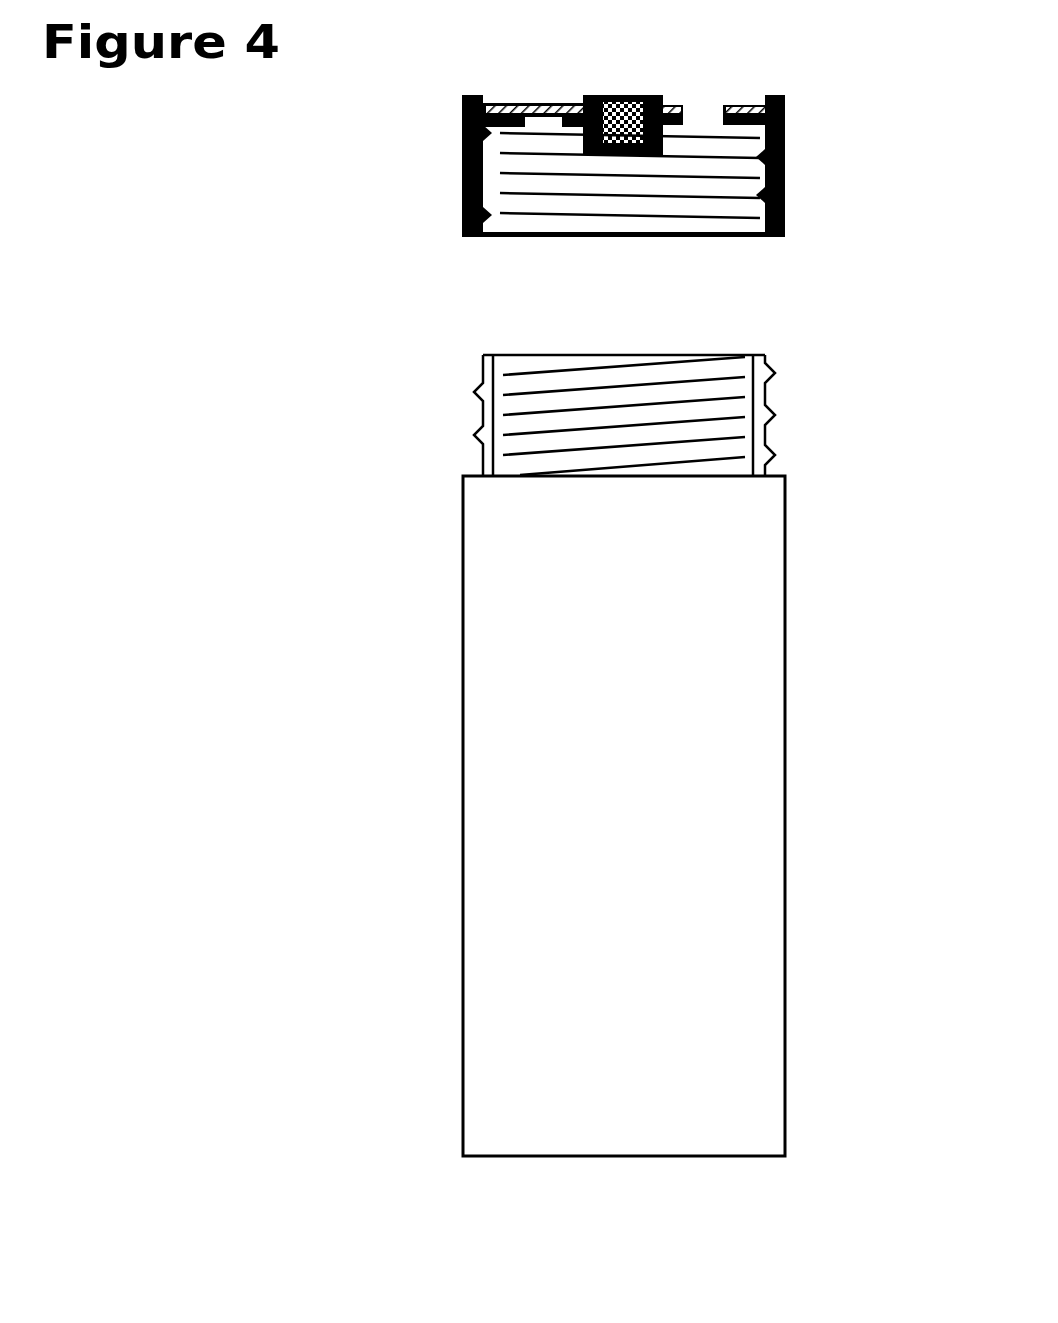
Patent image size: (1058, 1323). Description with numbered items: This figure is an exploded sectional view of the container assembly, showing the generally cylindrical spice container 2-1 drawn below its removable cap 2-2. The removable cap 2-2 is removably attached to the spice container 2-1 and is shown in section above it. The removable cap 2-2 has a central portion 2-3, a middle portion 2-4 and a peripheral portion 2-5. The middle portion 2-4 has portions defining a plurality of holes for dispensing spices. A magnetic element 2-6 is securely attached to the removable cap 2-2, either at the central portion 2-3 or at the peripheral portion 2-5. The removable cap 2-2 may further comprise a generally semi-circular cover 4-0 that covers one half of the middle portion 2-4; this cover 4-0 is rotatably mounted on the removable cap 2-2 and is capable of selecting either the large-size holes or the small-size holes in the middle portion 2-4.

The generally cylindrical spice container 2-1 is at (800, 639).
The removable cap 2-2 is at (800, 159).
The central portion 2-3 is at (623, 86).
The middle portion 2-4 is at (696, 130).
The peripheral portion 2-5 is at (460, 114).
The magnetic element 2-6 is at (590, 149).
The generally semi-circular cover 4-0 is at (538, 119).